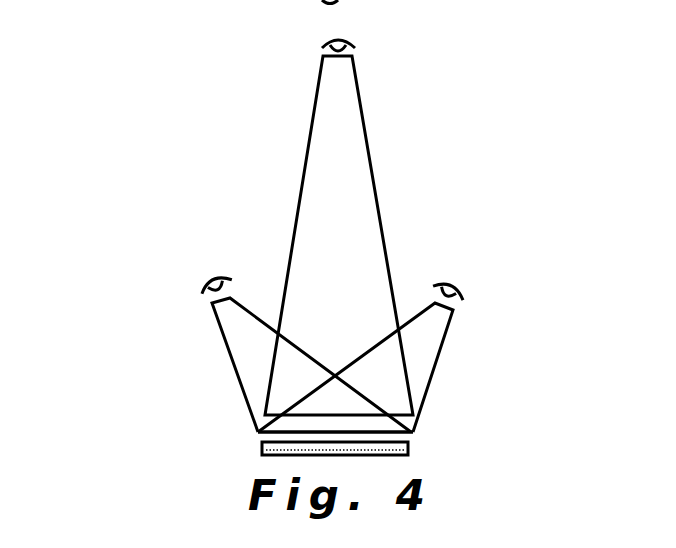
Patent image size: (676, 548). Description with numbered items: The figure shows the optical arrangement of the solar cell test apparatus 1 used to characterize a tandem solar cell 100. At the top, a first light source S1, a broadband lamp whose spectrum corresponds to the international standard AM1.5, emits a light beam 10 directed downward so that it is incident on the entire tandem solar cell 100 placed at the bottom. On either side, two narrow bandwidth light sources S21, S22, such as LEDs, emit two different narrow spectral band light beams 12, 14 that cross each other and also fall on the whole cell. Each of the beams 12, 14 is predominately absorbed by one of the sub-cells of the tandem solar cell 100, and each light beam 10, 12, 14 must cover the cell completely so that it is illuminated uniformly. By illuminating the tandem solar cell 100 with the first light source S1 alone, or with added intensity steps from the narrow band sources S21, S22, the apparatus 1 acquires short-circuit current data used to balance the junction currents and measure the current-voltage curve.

The solar cell test apparatus 1 is at (487, 138).
The light beam 10 is at (356, 226).
The light beam 12 is at (522, 355).
The light beam 14 is at (141, 352).
The tandem solar cell 100 is at (443, 448).
The first light source S1 is at (376, 40).
The narrow bandwidth light source S21 is at (190, 269).
The narrow bandwidth light source S22 is at (482, 278).